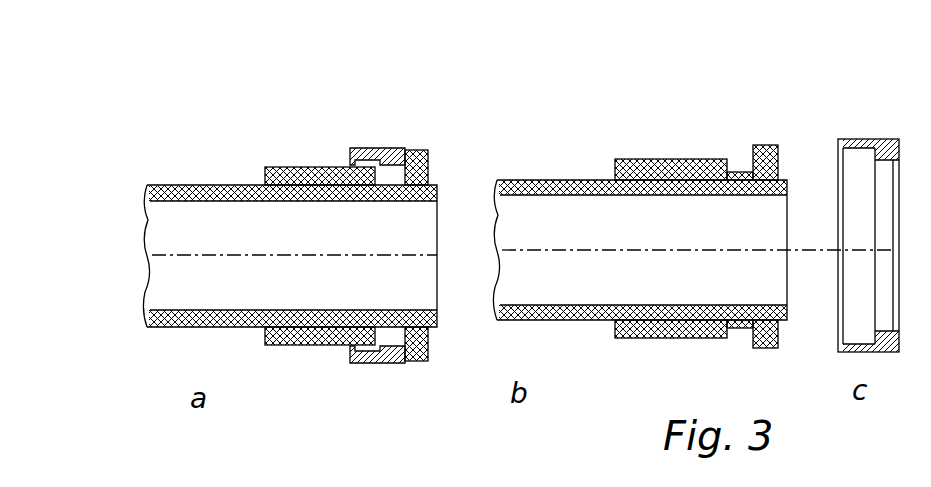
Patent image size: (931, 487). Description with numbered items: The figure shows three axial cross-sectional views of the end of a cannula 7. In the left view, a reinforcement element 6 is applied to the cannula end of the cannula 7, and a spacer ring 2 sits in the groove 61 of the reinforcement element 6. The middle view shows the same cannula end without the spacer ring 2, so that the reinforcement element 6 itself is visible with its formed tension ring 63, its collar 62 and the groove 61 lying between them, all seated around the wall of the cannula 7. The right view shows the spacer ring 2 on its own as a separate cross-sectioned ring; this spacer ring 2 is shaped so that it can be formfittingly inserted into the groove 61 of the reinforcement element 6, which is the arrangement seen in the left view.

The cannula 7 is at (175, 183).
The reinforcement element 6 is at (282, 167).
The spacer ring 2 is at (390, 148).
The tension ring 63 is at (645, 159).
The groove 61 is at (743, 170).
The collar 62 is at (763, 145).